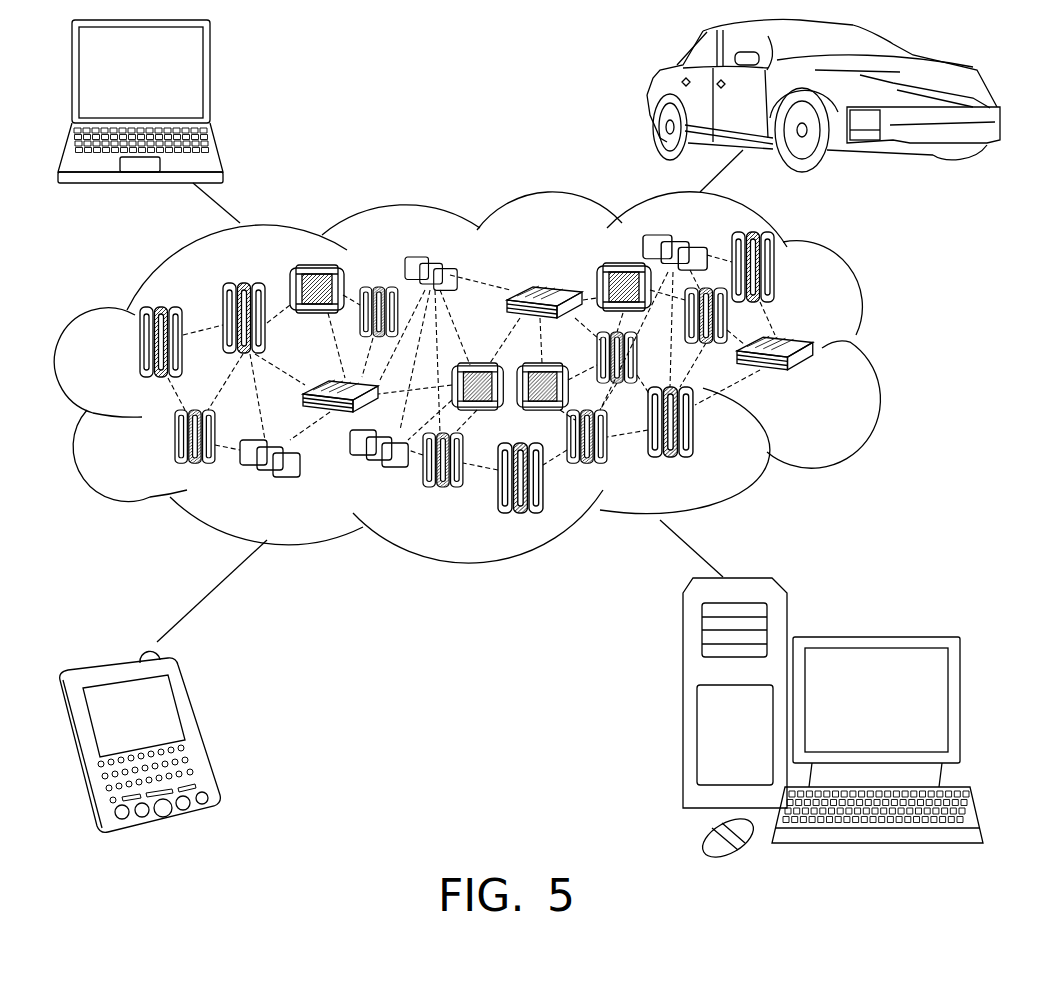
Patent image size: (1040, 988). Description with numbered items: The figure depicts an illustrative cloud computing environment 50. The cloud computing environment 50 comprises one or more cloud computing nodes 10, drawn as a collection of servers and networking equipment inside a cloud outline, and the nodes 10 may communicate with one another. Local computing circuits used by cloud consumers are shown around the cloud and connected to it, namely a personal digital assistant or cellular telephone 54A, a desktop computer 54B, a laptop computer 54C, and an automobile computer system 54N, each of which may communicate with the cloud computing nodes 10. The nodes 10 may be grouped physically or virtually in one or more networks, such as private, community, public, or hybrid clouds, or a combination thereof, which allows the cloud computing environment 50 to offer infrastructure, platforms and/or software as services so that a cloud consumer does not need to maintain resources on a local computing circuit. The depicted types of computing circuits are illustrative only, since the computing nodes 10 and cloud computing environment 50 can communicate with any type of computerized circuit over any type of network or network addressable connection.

The cloud computing node 10 is at (817, 380).
The cloud computing environment 50 is at (875, 353).
The personal digital assistant or cellular telephone 54A is at (200, 732).
The desktop computer 54B is at (870, 636).
The laptop computer 54C is at (210, 80).
The automobile computer system 54N is at (650, 98).